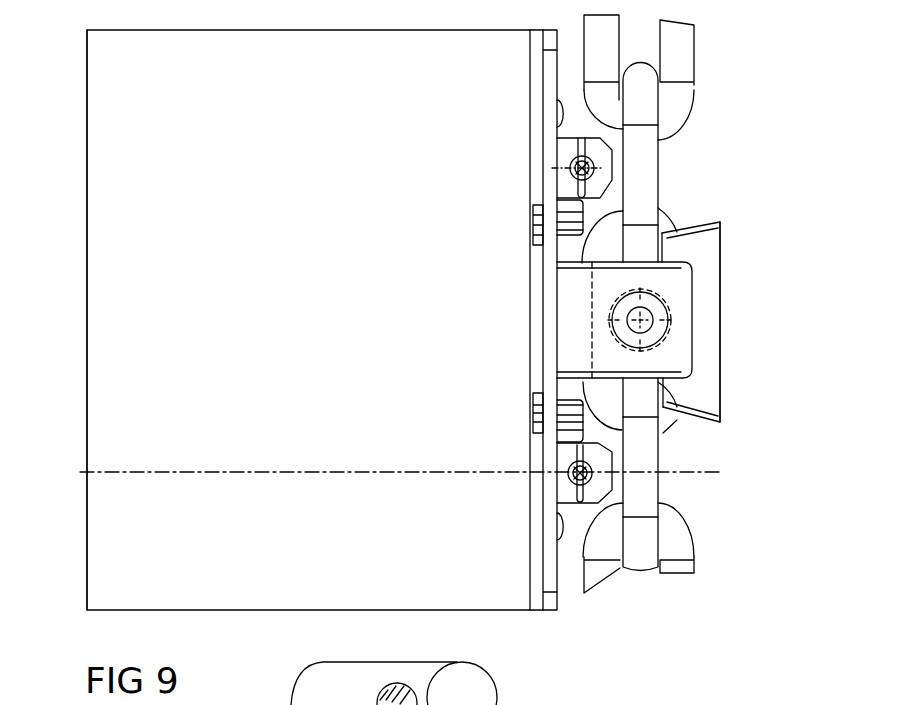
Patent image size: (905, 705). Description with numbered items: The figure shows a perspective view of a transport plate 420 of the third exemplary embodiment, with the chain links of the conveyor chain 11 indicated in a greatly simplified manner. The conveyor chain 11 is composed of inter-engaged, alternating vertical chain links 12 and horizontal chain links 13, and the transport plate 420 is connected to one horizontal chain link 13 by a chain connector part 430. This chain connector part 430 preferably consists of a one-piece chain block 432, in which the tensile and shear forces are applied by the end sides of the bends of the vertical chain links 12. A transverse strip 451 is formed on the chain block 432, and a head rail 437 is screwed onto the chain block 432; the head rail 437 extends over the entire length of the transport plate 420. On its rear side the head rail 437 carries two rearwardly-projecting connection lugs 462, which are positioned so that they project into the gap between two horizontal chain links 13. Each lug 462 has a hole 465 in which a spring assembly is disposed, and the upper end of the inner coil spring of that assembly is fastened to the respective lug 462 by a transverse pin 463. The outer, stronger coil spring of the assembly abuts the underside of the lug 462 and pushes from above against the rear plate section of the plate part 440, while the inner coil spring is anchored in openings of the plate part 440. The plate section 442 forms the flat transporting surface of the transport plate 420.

The conveyor chain 11 is at (710, 112).
The vertical chain link 12 is at (635, 497).
The horizontal chain link 13 is at (667, 428).
The transport plate 420 is at (578, 616).
The chain connector part 430 is at (738, 218).
The chain block 432 is at (742, 397).
The head rail 437 is at (553, 317).
The plate part 440 is at (220, 620).
The conveying surface 442 is at (138, 542).
The transverse strip 451 is at (573, 248).
The connection lug 462 is at (560, 182).
The transverse pin 463 is at (580, 143).
The hole 465 is at (575, 165).